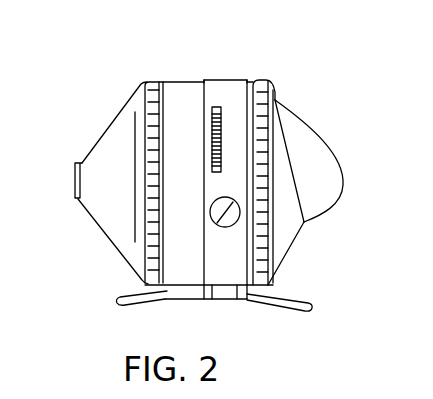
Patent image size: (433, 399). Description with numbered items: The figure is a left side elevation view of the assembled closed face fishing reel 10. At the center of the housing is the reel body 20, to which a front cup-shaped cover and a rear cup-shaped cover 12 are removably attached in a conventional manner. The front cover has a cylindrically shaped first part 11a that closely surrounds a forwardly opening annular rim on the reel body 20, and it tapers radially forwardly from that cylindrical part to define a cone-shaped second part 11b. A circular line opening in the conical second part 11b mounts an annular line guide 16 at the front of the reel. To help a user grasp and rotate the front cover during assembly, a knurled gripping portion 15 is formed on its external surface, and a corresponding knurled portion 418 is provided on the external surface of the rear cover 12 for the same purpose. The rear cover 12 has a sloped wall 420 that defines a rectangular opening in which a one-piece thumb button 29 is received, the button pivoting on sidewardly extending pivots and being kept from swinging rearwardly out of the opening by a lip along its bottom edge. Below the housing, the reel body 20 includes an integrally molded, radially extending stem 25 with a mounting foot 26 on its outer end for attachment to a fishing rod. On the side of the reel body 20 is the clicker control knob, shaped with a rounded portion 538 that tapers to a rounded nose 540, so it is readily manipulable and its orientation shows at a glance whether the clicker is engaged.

The reel 10 is at (271, 79).
The cylindrically shaped first part 11a is at (177, 280).
The cone-shaped second part 11b is at (103, 143).
The rear cup-shaped cover 12 is at (276, 95).
The knurled gripping portion 15 is at (153, 81).
The annular line guide 16 is at (75, 178).
The reel body 20 is at (231, 81).
The stem 25 is at (237, 280).
The mounting foot 26 is at (303, 298).
The thumb button 29 is at (327, 163).
The knurled portion 418 is at (262, 287).
The sloped wall 420 is at (290, 233).
The rounded portion 538 is at (212, 211).
The rounded nose 540 is at (225, 228).